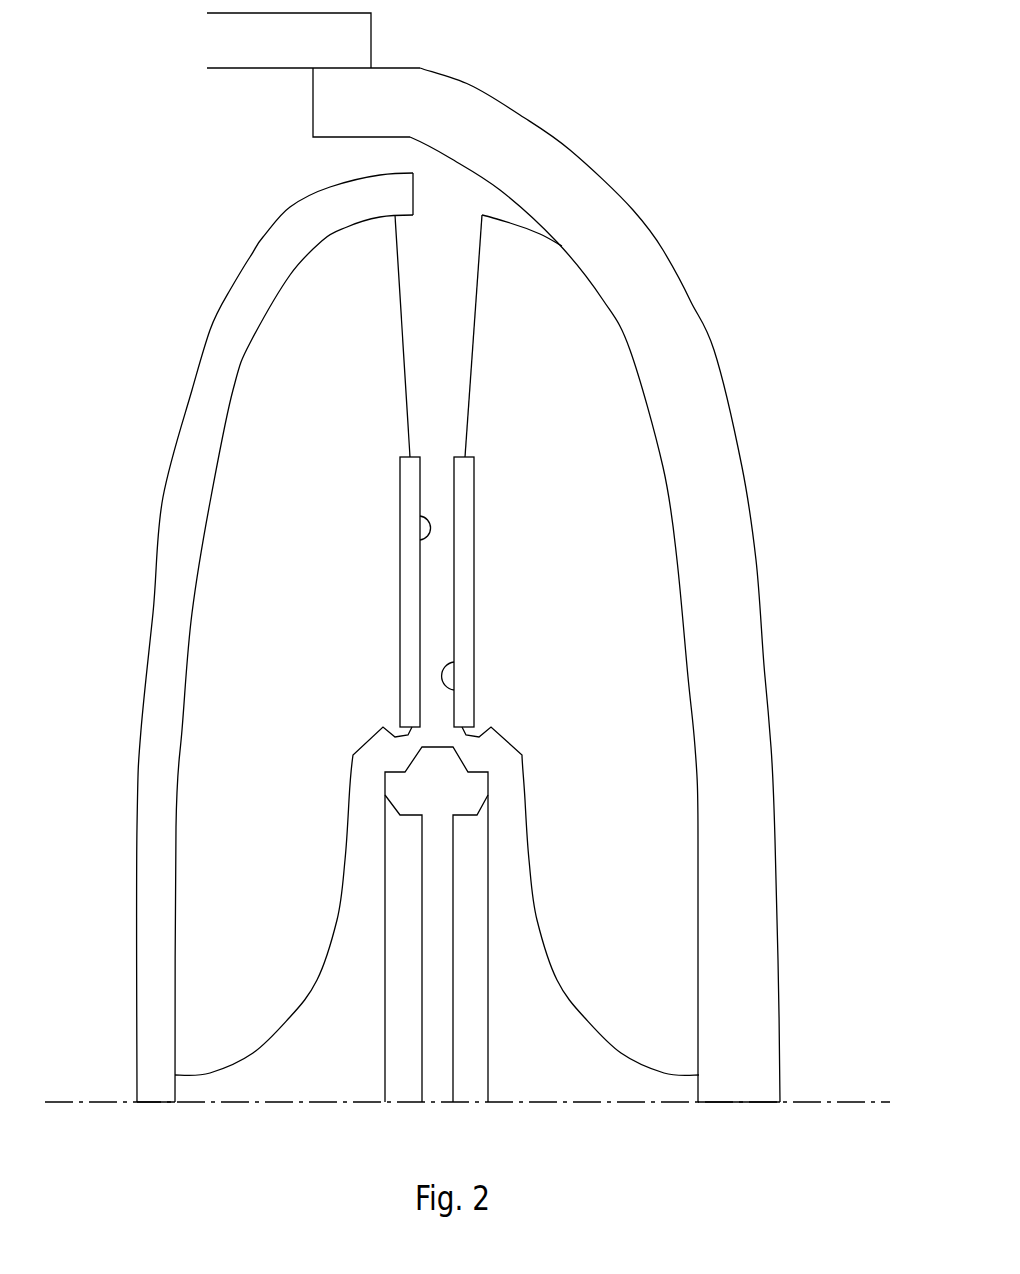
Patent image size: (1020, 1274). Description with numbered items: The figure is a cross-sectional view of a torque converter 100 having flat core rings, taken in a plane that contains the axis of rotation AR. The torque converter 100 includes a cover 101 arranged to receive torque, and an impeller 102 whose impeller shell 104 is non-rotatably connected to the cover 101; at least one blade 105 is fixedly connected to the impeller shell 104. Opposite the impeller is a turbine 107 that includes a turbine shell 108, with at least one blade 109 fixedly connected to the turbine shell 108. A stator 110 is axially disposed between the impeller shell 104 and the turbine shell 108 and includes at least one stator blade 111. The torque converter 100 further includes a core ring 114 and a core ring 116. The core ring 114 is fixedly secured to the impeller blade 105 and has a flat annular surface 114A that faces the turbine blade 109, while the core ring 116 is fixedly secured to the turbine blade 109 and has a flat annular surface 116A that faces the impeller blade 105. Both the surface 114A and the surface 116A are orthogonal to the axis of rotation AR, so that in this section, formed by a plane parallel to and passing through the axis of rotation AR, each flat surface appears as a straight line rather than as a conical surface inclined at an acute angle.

The torque converter 100 is at (463, 557).
The cover 101 is at (373, 42).
The impeller 102 is at (584, 585).
The impeller shell 104 is at (663, 250).
The blade 105 is at (570, 450).
The turbine 107 is at (225, 637).
The turbine shell 108 is at (200, 367).
The blade 109 is at (332, 450).
The stator 110 is at (362, 878).
The stator blade 111 is at (385, 983).
The core ring 114 is at (474, 622).
The flat annular surface 114A is at (454, 662).
The core ring 116 is at (400, 648).
The flat annular surface 116A is at (420, 540).
The axis of rotation AR is at (815, 1102).